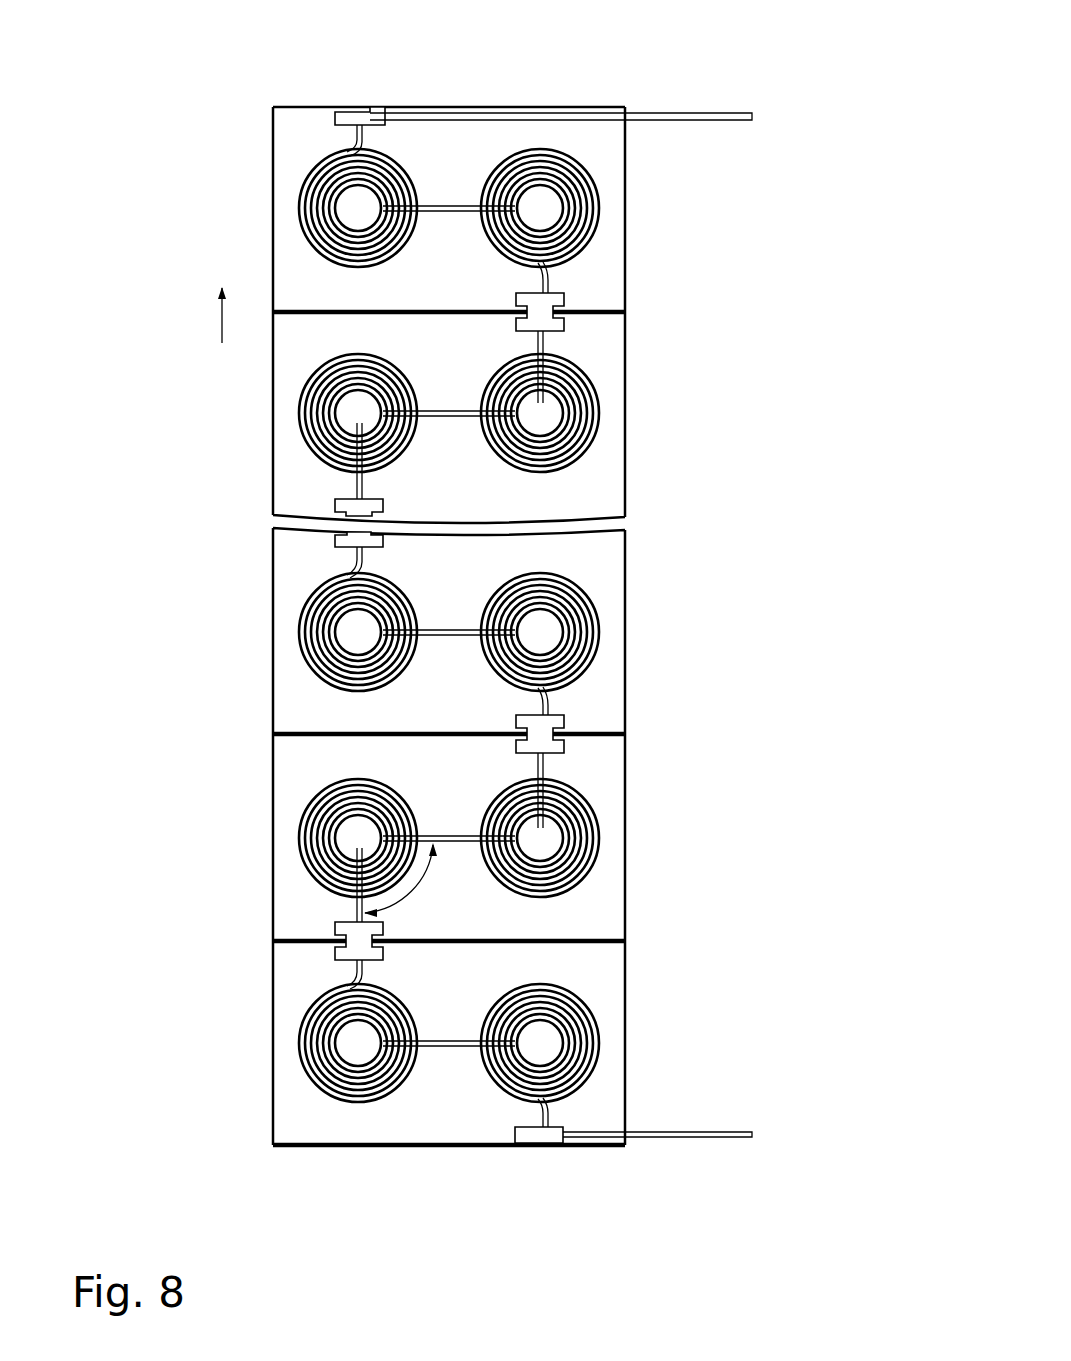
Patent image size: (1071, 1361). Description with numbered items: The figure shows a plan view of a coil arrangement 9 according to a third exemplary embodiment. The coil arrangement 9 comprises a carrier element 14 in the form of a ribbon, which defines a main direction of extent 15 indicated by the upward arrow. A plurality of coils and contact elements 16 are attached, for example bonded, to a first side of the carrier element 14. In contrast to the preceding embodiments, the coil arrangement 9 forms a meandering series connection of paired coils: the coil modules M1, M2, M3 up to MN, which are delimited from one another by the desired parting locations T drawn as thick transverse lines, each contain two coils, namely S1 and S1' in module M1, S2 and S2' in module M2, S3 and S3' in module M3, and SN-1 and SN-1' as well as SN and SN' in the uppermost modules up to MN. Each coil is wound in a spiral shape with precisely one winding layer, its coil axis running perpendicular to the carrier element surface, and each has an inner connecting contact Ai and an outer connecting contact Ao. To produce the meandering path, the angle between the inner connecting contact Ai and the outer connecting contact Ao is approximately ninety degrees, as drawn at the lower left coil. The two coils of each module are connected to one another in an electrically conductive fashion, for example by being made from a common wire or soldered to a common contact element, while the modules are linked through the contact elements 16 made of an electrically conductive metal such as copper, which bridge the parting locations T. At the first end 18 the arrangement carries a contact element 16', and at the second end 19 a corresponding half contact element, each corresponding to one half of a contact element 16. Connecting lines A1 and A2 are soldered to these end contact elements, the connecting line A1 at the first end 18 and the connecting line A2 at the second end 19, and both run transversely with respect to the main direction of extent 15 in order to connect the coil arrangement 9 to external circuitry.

The coil arrangement 9 is at (203, 540).
The carrier element 14 is at (610, 674).
The main direction of extent 15 is at (220, 314).
The contact element 16 is at (555, 626).
The contact element at first end 16' is at (544, 1191).
The first end 18 is at (433, 1147).
The second end 19 is at (461, 107).
The connecting line A1 is at (730, 1137).
The connecting line A2 is at (733, 112).
The outer connecting contact Ao is at (433, 845).
The inner connecting contact Ai is at (360, 908).
The desired parting location T is at (622, 308).
The coil module MN is at (657, 160).
The coil module M3 is at (657, 563).
The coil module M2 is at (657, 865).
The coil module M1 is at (657, 1068).
The coil SN is at (627, 208).
The coil SN' is at (267, 208).
The coil SN-1 is at (638, 413).
The coil SN-1' is at (267, 413).
The coil S3 is at (625, 632).
The coil S3' is at (267, 632).
The coil S2 is at (625, 838).
The coil S2' is at (267, 838).
The coil S1 is at (625, 1043).
The coil S1' is at (267, 1043).